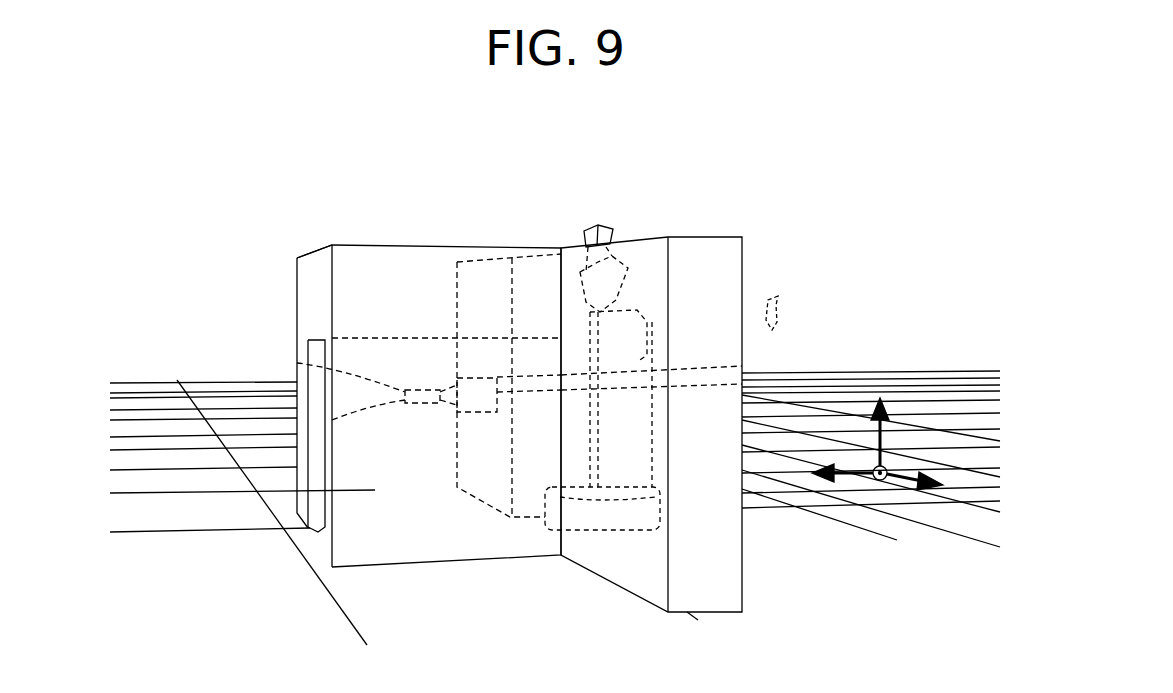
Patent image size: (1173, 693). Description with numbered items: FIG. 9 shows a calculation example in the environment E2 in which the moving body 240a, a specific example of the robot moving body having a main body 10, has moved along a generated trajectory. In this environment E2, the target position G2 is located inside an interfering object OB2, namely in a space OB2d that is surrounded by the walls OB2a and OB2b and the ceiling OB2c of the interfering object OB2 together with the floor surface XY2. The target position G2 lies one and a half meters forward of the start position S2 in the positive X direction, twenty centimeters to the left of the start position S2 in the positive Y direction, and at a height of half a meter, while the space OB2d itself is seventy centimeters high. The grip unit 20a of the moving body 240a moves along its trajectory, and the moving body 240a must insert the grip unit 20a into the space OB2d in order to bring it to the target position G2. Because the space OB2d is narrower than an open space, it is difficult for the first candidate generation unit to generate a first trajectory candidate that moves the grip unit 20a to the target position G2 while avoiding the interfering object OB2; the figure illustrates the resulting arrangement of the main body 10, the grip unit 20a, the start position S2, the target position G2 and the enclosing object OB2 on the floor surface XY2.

The interfering object OB2 is at (473, 198).
The wall OB2a is at (712, 237).
The wall OB2b is at (297, 302).
The ceiling OB2c is at (313, 262).
The space OB2d is at (375, 490).
The moving body 240a is at (598, 226).
The grip unit 20a is at (308, 437).
The target position G2 is at (297, 363).
The main body 10 is at (745, 361).
The start position S2 is at (780, 294).
The floor surface XY2 is at (942, 383).
The environment E2 is at (976, 165).